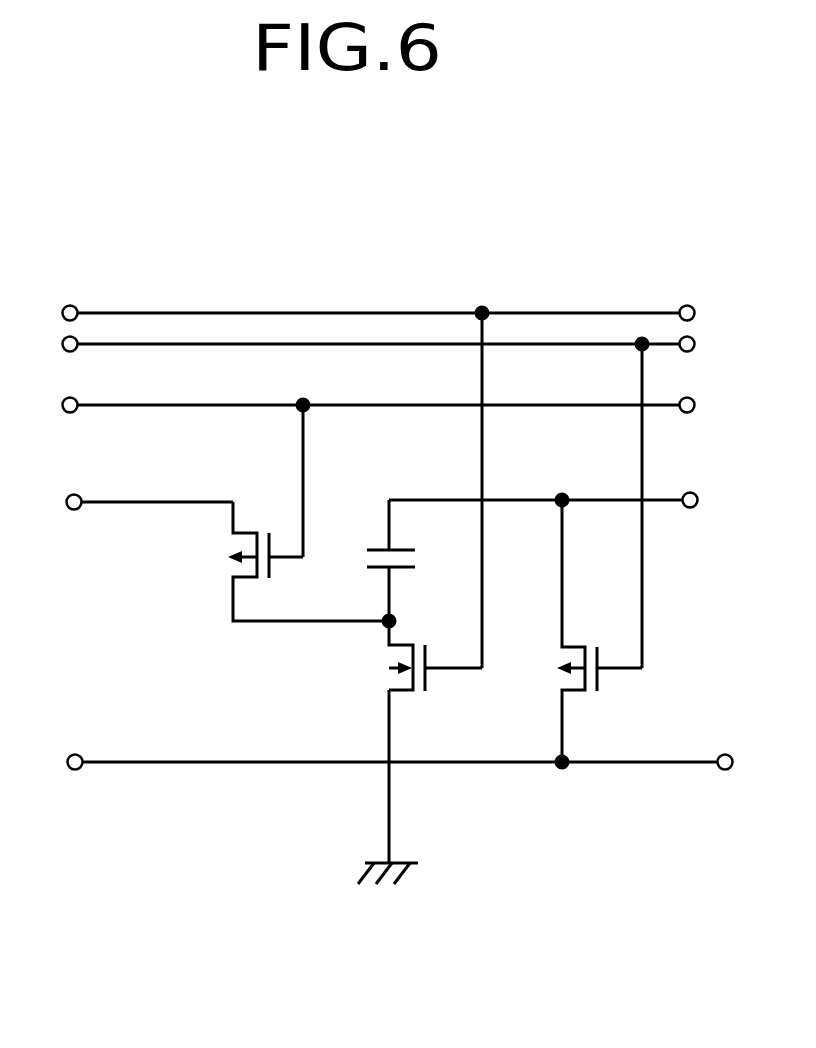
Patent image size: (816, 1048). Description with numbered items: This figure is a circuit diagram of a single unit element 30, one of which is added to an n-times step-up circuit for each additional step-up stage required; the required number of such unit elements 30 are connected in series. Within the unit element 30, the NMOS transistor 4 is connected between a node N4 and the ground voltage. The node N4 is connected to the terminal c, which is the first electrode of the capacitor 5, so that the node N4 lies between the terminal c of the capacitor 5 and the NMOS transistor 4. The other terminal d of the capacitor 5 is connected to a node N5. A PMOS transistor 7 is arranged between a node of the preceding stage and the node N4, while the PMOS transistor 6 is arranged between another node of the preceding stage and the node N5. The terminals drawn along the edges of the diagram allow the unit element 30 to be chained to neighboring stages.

The unit element 30 is at (630, 262).
The PMOS transistor 7 is at (259, 527).
The capacitor 5 is at (407, 542).
The NMOS transistor 4 is at (408, 698).
The PMOS transistor 6 is at (588, 697).
The node N4 is at (383, 626).
The node N5 is at (564, 498).